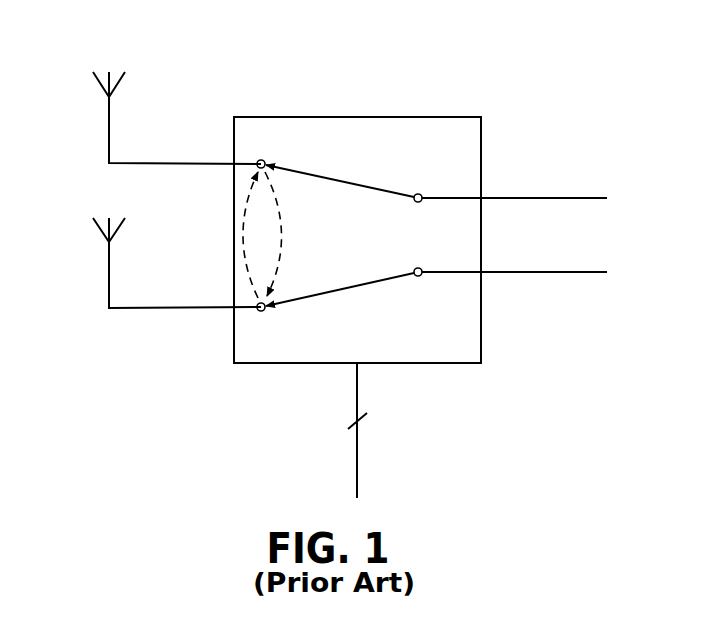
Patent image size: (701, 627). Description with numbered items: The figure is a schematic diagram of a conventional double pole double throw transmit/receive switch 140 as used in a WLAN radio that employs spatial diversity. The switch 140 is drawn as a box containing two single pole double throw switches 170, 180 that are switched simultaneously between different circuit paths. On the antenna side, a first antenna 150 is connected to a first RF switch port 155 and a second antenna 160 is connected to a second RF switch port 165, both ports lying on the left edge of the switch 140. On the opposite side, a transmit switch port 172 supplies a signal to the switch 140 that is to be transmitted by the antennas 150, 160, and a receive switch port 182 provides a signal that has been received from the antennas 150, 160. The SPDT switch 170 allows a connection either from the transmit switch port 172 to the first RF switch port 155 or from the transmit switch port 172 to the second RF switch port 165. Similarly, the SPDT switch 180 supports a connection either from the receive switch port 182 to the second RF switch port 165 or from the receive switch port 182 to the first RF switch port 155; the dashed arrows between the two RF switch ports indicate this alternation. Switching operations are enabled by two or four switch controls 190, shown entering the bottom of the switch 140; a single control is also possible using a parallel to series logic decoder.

The DPDT T/R switch 140 is at (361, 115).
The first antenna 150 is at (103, 104).
The first RF switch port 155 is at (233, 159).
The second antenna 160 is at (103, 254).
The second RF switch port 165 is at (233, 303).
The SPDT switch 170 is at (414, 192).
The transmit switch port 172 is at (485, 195).
The SPDT switch 180 is at (412, 280).
The receive switch port 182 is at (486, 270).
The switch controls 190 is at (431, 430).